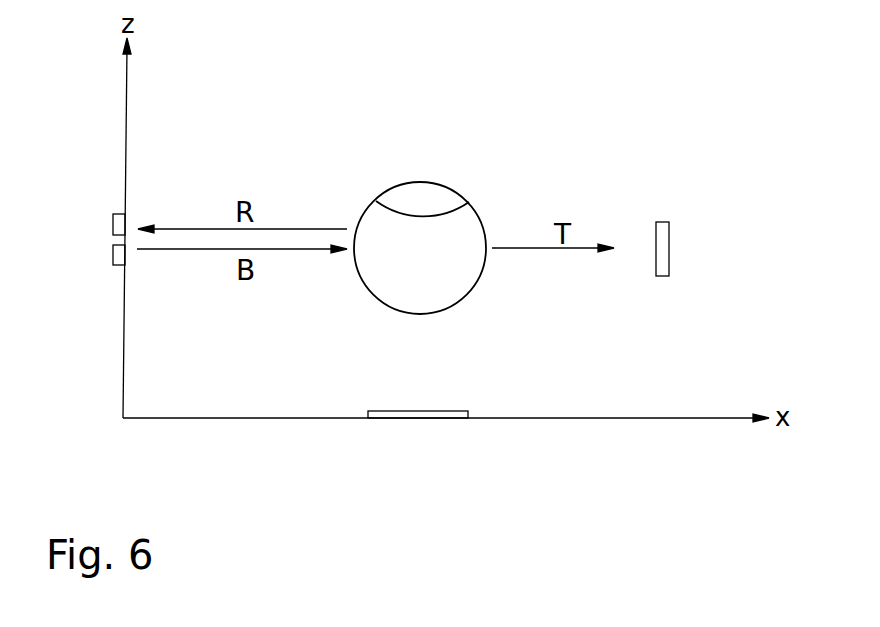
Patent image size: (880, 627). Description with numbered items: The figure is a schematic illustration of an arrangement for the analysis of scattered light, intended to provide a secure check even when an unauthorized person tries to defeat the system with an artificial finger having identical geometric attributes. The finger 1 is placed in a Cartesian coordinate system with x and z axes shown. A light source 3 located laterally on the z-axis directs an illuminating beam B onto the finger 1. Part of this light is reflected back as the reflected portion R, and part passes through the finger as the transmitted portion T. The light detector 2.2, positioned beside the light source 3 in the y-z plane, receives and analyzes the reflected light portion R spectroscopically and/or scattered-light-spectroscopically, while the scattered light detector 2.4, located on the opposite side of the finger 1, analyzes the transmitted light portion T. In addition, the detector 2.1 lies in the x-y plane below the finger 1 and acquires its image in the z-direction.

The finger 1 is at (470, 218).
The detector 2.1 is at (465, 412).
The light detector 2.2 is at (117, 221).
The scattered light detector 2.4 is at (663, 267).
The light source 3 is at (117, 260).